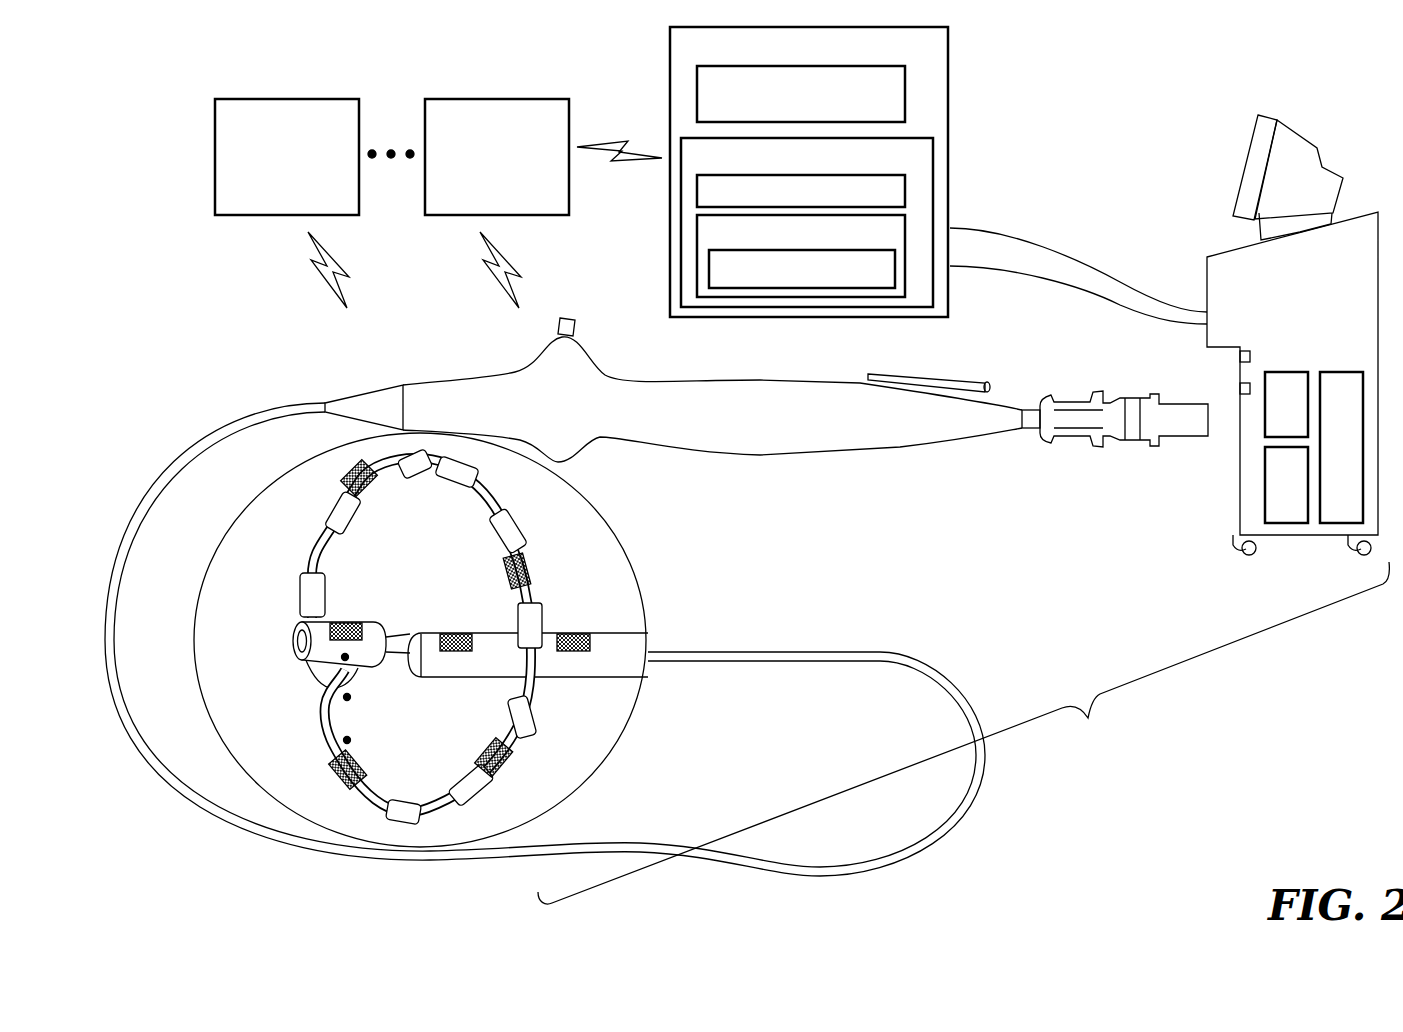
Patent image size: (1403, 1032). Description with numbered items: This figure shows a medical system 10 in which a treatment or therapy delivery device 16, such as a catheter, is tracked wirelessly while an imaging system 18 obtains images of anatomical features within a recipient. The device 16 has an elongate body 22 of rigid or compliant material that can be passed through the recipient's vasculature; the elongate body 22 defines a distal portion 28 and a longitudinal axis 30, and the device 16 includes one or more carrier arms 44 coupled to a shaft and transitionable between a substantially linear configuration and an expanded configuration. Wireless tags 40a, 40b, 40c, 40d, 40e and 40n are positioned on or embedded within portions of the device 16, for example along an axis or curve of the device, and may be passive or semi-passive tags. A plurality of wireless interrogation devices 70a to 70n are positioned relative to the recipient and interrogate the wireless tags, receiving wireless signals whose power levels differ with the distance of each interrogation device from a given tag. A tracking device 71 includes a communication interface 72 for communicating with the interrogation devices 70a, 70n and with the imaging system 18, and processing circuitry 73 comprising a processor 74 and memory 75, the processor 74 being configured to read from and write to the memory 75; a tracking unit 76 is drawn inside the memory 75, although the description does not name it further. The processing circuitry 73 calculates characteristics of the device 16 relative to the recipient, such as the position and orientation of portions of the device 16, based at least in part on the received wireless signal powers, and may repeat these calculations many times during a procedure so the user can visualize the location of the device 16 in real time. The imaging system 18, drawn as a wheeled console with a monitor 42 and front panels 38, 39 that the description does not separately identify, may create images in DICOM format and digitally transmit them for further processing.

The medical system 10 is at (963, 733).
The device 16 is at (420, 640).
The imaging system 18 is at (1292, 383).
The elongate body 22 is at (656, 595).
The distal portion 28 is at (243, 403).
The longitudinal axis 30 is at (438, 808).
The console panel 38 is at (1341, 447).
The console panel 39 is at (1286, 485).
The display 42 is at (1299, 180).
The carrier arm 44 is at (1253, 138).
The wireless tag 40a is at (365, 483).
The wireless tag 40b is at (527, 572).
The wireless tag 40c is at (575, 632).
The wireless tag 40d is at (492, 752).
The wireless tag 40e is at (355, 762).
The wireless tag 40n is at (348, 622).
The wireless interrogation device 70a is at (287, 203).
The wireless interrogation device 70n is at (543, 203).
The tracking device 71 is at (809, 172).
The communication interface 72 is at (801, 94).
The processing circuitry 73 is at (807, 222).
The processor 74 is at (801, 191).
The memory 75 is at (801, 256).
The tracking unit 76 is at (802, 269).